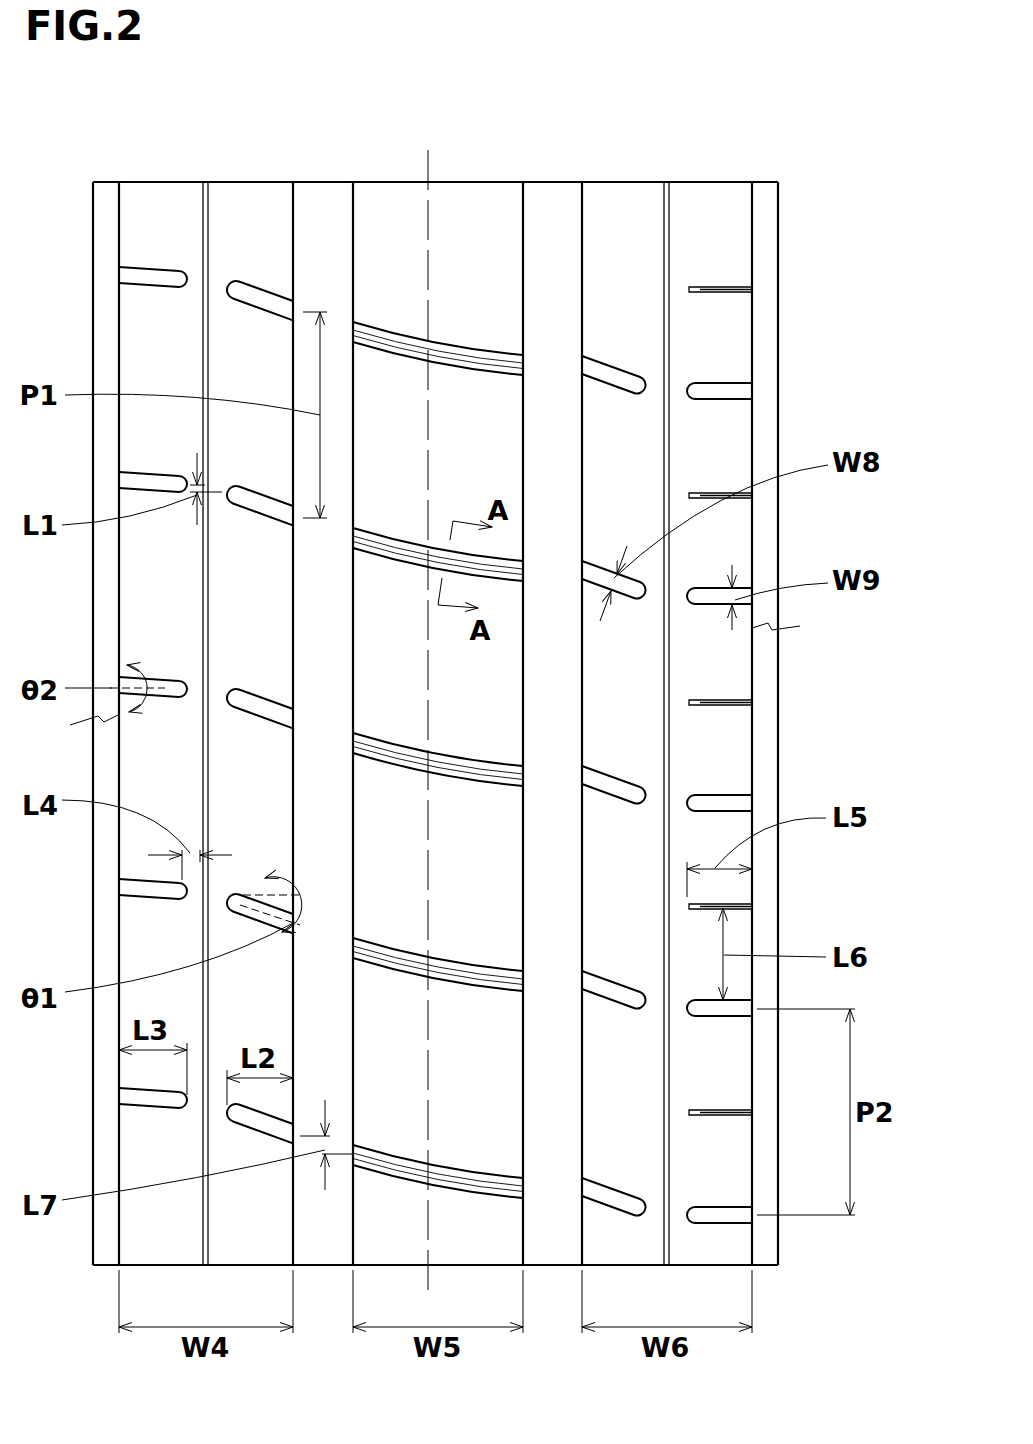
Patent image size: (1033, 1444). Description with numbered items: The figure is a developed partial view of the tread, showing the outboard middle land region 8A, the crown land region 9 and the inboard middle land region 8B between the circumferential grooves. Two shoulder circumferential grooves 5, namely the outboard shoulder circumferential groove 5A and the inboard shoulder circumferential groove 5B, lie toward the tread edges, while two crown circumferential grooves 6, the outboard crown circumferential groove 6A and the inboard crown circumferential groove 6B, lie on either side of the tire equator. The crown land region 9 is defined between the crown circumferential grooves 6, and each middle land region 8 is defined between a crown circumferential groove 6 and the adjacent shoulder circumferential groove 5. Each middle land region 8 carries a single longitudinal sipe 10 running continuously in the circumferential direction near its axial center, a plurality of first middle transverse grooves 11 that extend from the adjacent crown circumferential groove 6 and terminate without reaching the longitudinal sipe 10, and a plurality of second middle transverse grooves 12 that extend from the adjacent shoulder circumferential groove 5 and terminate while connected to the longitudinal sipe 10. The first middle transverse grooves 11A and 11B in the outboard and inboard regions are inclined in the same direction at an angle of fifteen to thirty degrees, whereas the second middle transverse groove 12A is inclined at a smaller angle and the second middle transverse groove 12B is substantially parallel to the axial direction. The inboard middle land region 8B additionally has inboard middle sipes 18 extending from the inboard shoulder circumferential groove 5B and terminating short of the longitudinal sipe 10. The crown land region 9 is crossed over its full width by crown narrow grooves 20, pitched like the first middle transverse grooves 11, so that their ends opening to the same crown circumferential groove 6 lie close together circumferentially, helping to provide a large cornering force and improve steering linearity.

The shoulder circumferential groove 5 is at (105, 243).
The outboard shoulder circumferential groove 5A is at (107, 218).
The inboard shoulder circumferential groove 5B is at (763, 218).
The crown circumferential groove 6 is at (336, 242).
The outboard crown circumferential groove 6A is at (321, 220).
The inboard crown circumferential groove 6B is at (558, 213).
The middle land region 8 is at (165, 217).
The outboard middle land region 8A is at (253, 220).
The inboard middle land region 8B is at (703, 220).
The crown land region 9 is at (455, 215).
The longitudinal sipe 10 is at (203, 765).
The first middle transverse groove 11 is at (262, 510).
The first middle transverse groove in the outboard middle land region 11A is at (258, 305).
The first middle transverse groove in the inboard middle land region 11B is at (622, 383).
The second middle transverse groove 12 is at (150, 481).
The second middle transverse groove in the outboard middle land region 12A is at (150, 279).
The second middle transverse groove in the inboard middle land region 12B is at (718, 805).
The inboard middle sipe 18 is at (718, 700).
The crown narrow groove 20 is at (505, 568).